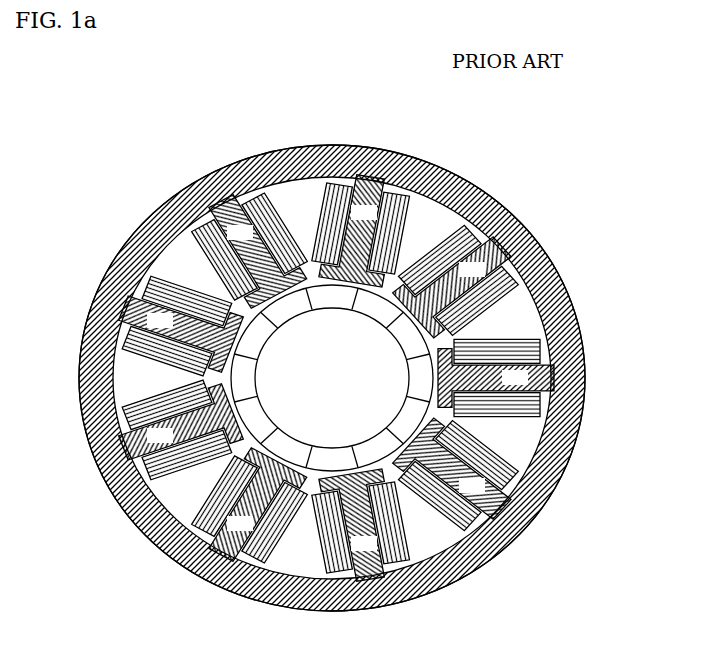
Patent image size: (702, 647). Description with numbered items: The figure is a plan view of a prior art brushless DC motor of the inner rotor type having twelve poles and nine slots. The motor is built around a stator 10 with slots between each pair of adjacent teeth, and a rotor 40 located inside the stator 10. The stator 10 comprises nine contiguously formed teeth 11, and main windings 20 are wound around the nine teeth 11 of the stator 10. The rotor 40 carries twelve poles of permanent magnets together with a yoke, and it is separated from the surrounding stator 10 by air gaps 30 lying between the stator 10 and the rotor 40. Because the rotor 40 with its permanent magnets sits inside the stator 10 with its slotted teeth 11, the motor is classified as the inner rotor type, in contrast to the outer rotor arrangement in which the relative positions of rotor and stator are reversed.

The stator 10 is at (567, 266).
The main windings 20 is at (544, 251).
The teeth 11 is at (521, 231).
The air gaps 30 is at (412, 381).
The rotor 40 is at (398, 343).